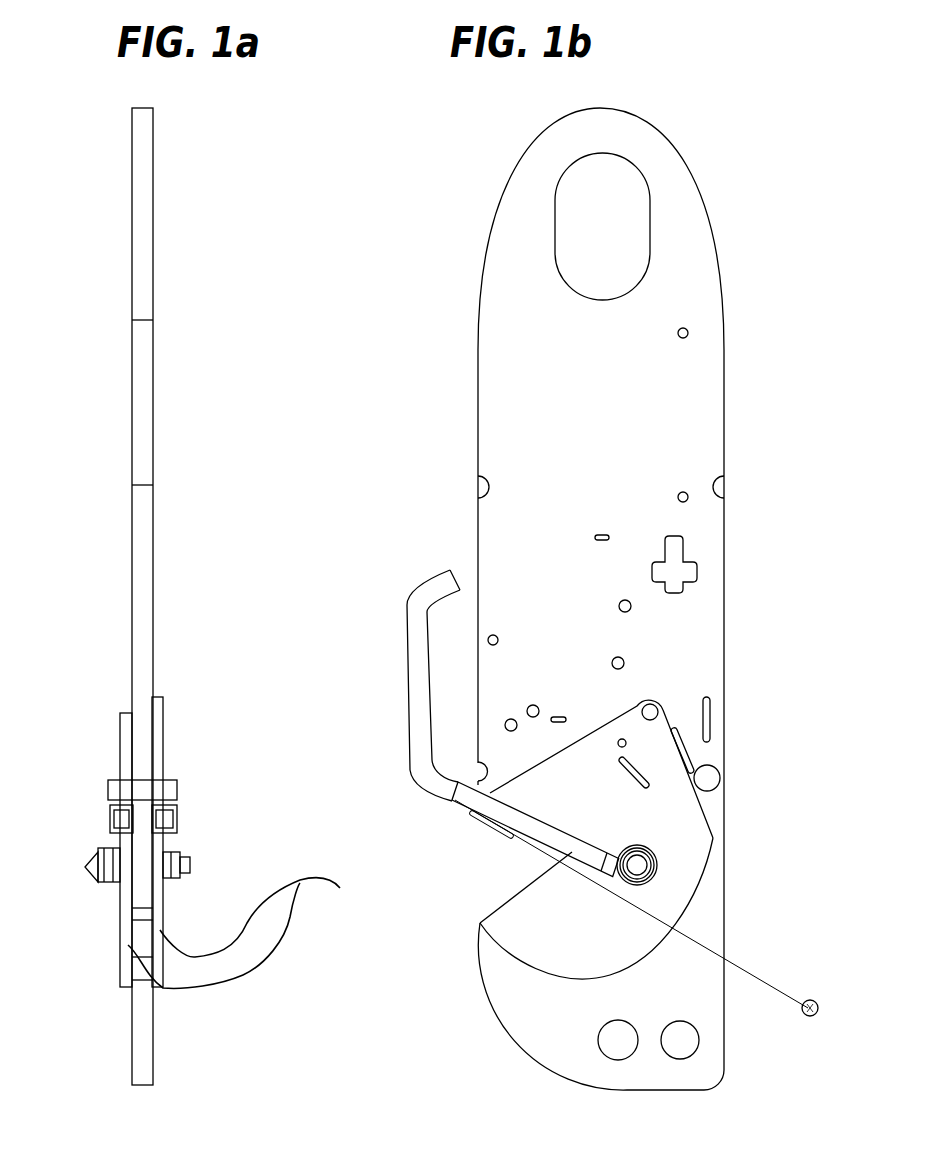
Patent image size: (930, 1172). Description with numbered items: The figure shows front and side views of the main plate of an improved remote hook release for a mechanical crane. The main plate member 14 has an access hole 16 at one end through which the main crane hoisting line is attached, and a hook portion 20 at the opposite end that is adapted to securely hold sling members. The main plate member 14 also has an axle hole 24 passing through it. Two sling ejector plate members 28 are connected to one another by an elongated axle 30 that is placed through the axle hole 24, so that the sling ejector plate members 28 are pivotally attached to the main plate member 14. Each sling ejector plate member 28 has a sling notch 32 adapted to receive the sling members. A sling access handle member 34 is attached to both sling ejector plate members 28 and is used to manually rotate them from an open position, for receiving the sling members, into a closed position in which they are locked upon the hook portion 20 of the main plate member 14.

In FIG. 1B, the main plate member 14 is at (588, 444).
In FIG. 1B, the access hole 16 is at (604, 244).
In FIG. 1B, the hook portion 20 is at (510, 1005).
In FIG. 1B, the axle hole 24 is at (644, 855).
In FIG. 1B, the sling ejector plate member 28 is at (522, 925).
In FIG. 1A, the elongated axle 30 is at (85, 867).
In FIG. 1B, the sling notch 32 is at (510, 862).
In FIG. 1B, the sling access handle member 34 is at (415, 638).